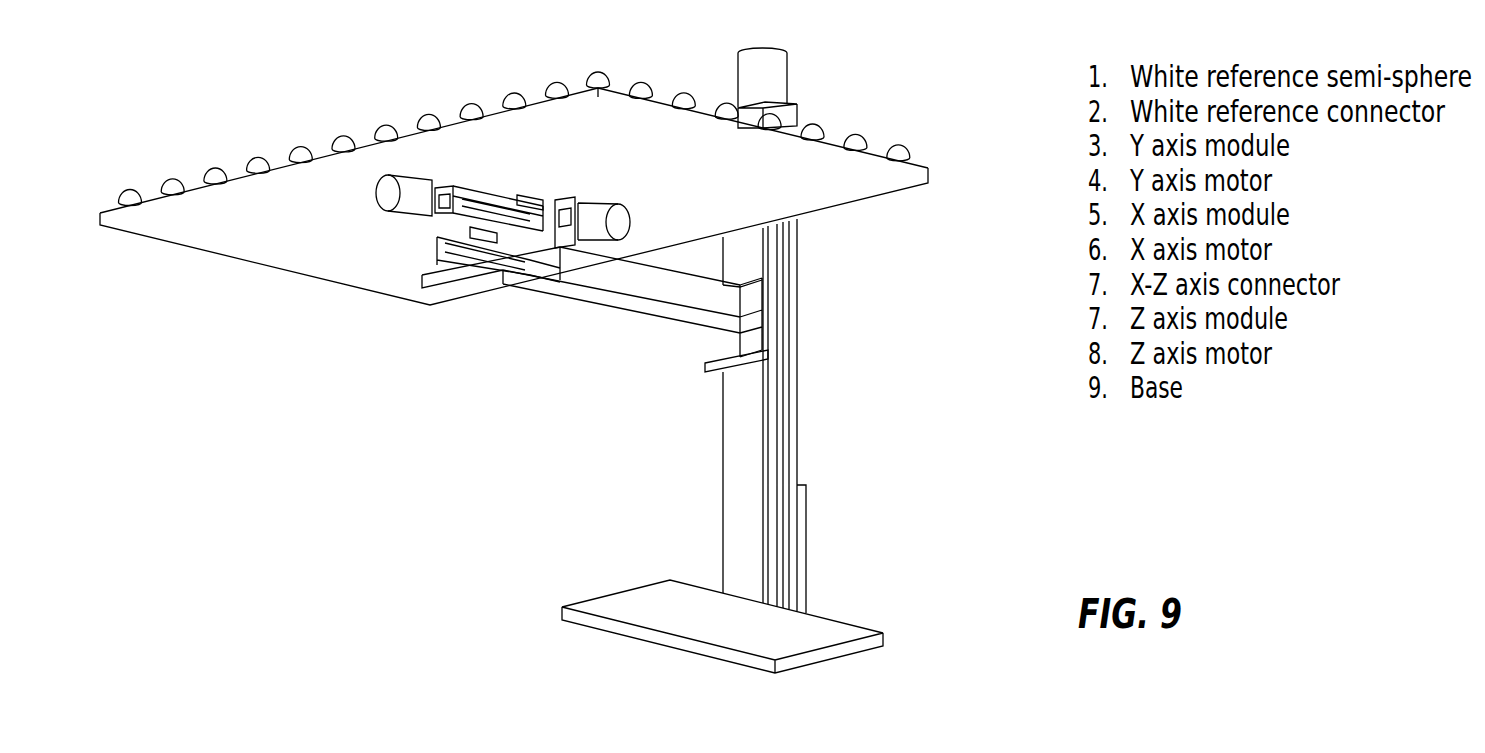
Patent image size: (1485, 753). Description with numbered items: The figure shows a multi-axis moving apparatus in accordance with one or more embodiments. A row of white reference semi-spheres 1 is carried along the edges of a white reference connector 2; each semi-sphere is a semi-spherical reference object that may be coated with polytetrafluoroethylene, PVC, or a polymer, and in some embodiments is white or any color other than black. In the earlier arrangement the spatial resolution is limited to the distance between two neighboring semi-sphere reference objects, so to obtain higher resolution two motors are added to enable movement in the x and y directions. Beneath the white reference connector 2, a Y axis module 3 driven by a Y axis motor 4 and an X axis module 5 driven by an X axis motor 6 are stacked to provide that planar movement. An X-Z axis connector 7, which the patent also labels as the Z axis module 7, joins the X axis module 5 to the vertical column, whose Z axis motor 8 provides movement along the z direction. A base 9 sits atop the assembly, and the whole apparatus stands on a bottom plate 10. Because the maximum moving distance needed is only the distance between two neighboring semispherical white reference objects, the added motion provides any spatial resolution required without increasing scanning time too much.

The white reference semi-sphere 1 is at (248, 167).
The white reference connector 2 is at (255, 230).
The Y axis module 3 is at (450, 217).
The Y axis motor 4 is at (392, 200).
The X axis module 5 is at (530, 240).
The X axis motor 6 is at (600, 228).
The X-Z axis connector 7 is at (660, 292).
The Z axis motor 8 is at (800, 373).
The base 9 is at (768, 73).
The Base plate 10 is at (808, 633).